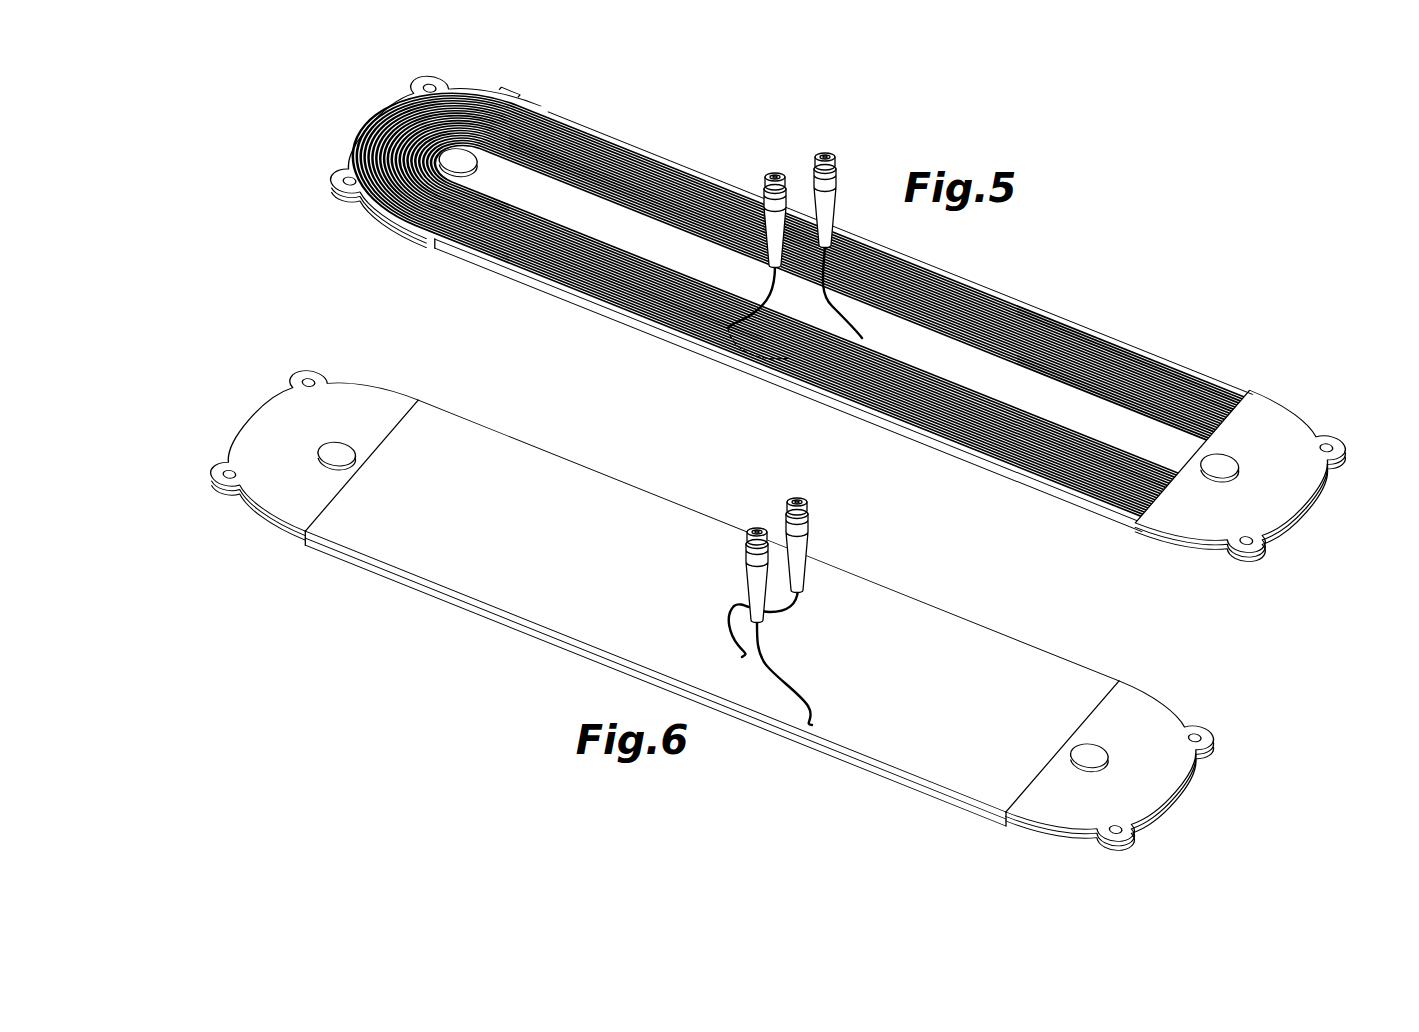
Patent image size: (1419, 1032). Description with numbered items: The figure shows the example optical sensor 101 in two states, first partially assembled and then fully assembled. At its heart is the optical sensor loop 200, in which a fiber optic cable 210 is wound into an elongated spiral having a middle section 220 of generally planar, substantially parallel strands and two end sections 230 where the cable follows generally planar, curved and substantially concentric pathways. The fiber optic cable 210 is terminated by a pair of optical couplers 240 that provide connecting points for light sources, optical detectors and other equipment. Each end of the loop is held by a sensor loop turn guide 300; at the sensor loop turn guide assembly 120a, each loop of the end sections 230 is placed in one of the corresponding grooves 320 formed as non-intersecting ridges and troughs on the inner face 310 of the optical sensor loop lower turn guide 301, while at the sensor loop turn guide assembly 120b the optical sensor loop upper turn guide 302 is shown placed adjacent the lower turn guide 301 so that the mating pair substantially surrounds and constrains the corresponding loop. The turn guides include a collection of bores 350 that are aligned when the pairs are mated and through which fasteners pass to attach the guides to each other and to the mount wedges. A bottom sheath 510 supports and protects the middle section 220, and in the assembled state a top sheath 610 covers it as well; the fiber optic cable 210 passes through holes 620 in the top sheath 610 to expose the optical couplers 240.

In FIG. 5, the optical sensor 101 is at (818, 327).
In FIG. 6, the optical sensor 101 is at (739, 607).
In FIG. 5, the sensor loop turn guide assembly 120a is at (362, 112).
In FIG. 6, the sensor loop turn guide assembly 120a is at (280, 410).
In FIG. 5, the sensor loop turn guide assembly 120b is at (1330, 508).
In FIG. 6, the sensor loop turn guide assembly 120b is at (1200, 804).
In FIG. 5, the optical sensor loop 200 is at (1098, 333).
In FIG. 5, the fiber optic cable 210 is at (768, 292).
In FIG. 6, the fiber optic cable 210 is at (726, 612).
In FIG. 5, the middle section 220 is at (796, 392).
In FIG. 5, the end sections 230 is at (563, 82).
In FIG. 5, the optical couplers 240 is at (824, 152).
In FIG. 6, the optical couplers 240 is at (796, 499).
In FIG. 5, the optical sensor loop turn guide 300 is at (818, 316).
In FIG. 6, the optical sensor loop turn guide 300 is at (739, 606).
In FIG. 5, the optical sensor loop lower turn guide 301 is at (390, 228).
In FIG. 6, the optical sensor loop lower turn guide 301 is at (262, 536).
In FIG. 6, the optical sensor loop upper turn guide 302 is at (354, 378).
In FIG. 5, the inner face 310 is at (400, 102).
In FIG. 5, the grooves 320 is at (510, 95).
In FIG. 5, the bores 350 is at (430, 82).
In FIG. 6, the bores 350 is at (308, 376).
In FIG. 6, the bottom sheath 510 is at (452, 612).
In FIG. 6, the top sheath 610 is at (542, 638).
In FIG. 6, the holes 620 is at (742, 652).